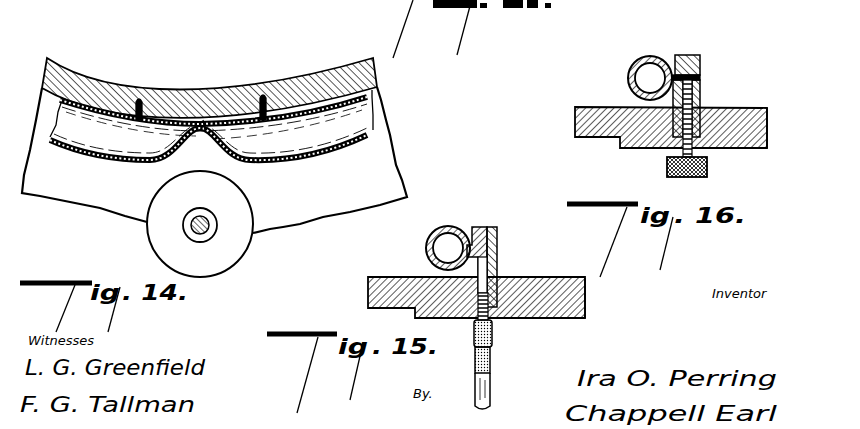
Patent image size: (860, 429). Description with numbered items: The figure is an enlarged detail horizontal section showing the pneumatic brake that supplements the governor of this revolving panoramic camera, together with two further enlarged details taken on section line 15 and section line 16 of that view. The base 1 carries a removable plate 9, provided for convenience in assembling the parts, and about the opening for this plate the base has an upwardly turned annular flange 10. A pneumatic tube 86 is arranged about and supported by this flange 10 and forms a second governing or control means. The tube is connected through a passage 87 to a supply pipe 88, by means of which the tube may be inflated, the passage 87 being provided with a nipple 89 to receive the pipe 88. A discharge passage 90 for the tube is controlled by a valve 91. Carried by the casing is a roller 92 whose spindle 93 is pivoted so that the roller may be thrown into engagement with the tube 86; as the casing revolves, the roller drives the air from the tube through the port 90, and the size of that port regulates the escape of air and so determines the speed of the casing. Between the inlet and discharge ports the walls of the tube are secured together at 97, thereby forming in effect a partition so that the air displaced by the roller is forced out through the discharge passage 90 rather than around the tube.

In FIG. 14, the base 1 is at (395, 185).
In FIG. 15, the base 1 is at (383, 277).
In FIG. 16, the base 1 is at (588, 107).
In FIG. 15, the removable plate 9 is at (586, 298).
In FIG. 16, the removable plate 9 is at (748, 150).
In FIG. 14, the annular flange 10 is at (317, 80).
In FIG. 15, the annular flange 10 is at (502, 234).
In FIG. 16, the annular flange 10 is at (688, 54).
In FIG. 14, the section line 15— 15 is at (276, 183).
In FIG. 14, the section line 16— 16 is at (137, 188).
In FIG. 14, the pneumatic tube 86 is at (385, 133).
In FIG. 15, the pneumatic tube 86 is at (458, 231).
In FIG. 16, the pneumatic tube 86 is at (640, 60).
In FIG. 14, the passage 87 is at (262, 95).
In FIG. 15, the passage 87 is at (484, 262).
In FIG. 15, the supply pipe 88 is at (490, 382).
In FIG. 15, the nipple 89 is at (490, 323).
In FIG. 14, the discharge passage 90 is at (139, 104).
In FIG. 16, the discharge passage 90 is at (702, 74).
In FIG. 16, the valve 91 is at (704, 98).
In FIG. 14, the roller 92 is at (167, 250).
In FIG. 14, the spindle 93 is at (193, 228).
In FIG. 14, the secured walls of the tube 97 is at (204, 126).